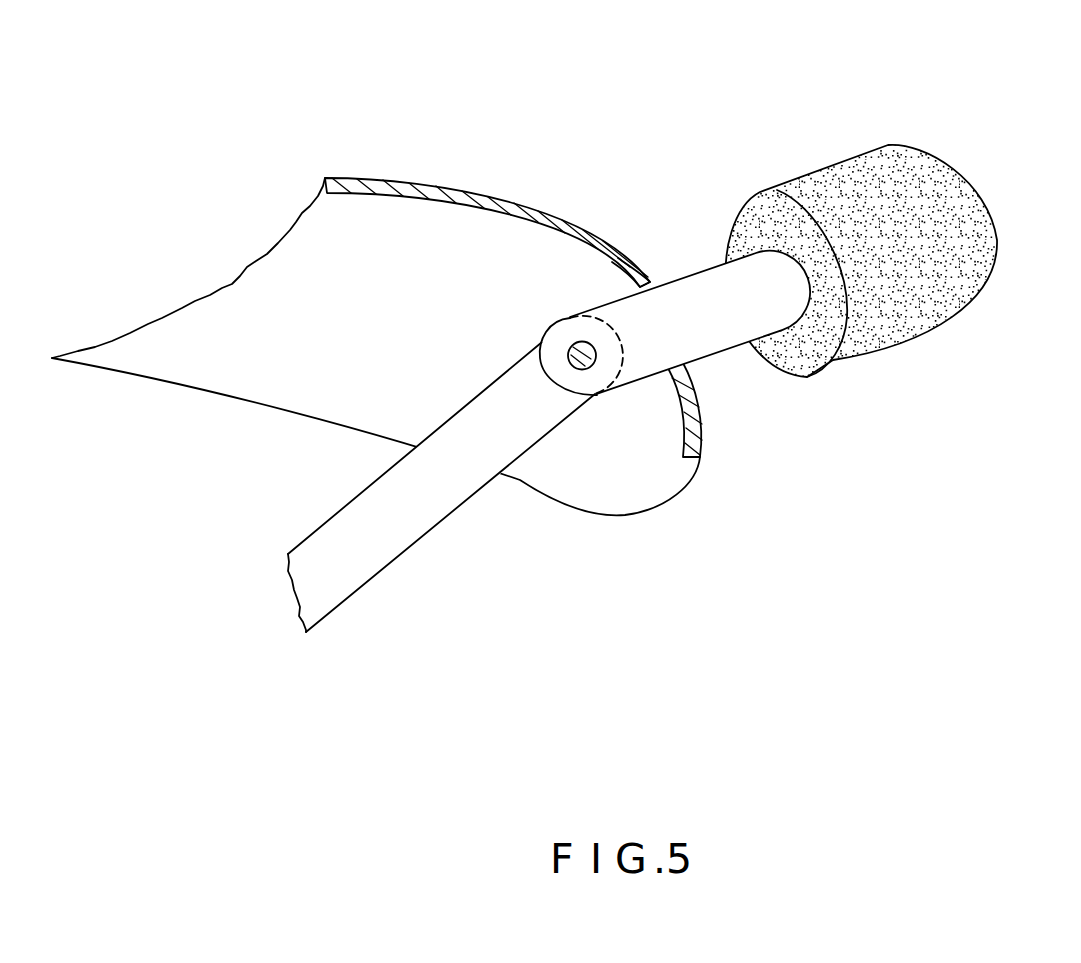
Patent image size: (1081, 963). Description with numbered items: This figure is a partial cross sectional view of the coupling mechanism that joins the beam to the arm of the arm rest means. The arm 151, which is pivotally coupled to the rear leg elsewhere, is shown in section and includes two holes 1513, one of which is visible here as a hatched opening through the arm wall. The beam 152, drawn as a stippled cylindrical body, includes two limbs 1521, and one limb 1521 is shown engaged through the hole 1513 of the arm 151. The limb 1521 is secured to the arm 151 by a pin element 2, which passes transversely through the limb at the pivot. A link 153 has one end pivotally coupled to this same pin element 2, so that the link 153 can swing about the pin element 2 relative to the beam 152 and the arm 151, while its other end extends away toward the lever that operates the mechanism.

The arm 151 is at (381, 178).
The holes 1513 is at (651, 283).
The beam 152 is at (922, 184).
The limbs 1521 is at (733, 318).
The link 153 is at (405, 533).
The pin element 2 is at (582, 356).